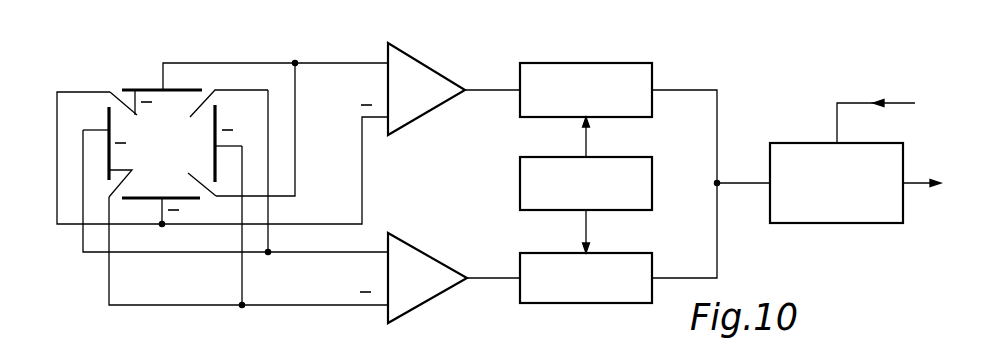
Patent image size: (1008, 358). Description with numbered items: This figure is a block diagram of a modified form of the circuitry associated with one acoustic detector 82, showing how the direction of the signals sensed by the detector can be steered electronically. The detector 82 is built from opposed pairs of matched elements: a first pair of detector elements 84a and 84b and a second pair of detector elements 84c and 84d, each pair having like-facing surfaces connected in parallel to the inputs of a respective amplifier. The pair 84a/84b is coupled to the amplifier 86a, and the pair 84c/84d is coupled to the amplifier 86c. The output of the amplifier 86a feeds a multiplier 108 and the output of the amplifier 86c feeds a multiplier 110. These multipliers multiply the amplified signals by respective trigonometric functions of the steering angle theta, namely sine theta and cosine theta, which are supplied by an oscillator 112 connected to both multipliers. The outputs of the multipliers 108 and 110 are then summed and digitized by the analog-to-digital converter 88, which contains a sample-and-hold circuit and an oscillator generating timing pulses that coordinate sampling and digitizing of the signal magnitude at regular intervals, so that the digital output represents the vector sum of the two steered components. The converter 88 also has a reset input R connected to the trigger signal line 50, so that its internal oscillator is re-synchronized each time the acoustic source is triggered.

The trigger signal line 50 is at (852, 103).
The acoustic detector 82 is at (140, 122).
The detector element 84a is at (191, 88).
The detector element 84b is at (148, 200).
The detector element 84c is at (109, 167).
The detector element 84d is at (217, 174).
The amplifier 86a is at (410, 52).
The amplifier 86c is at (423, 268).
The analog-to-digital converter 88 is at (826, 223).
The multiplier 108 is at (597, 72).
The multiplier 110 is at (597, 295).
The oscillator 112 is at (636, 170).